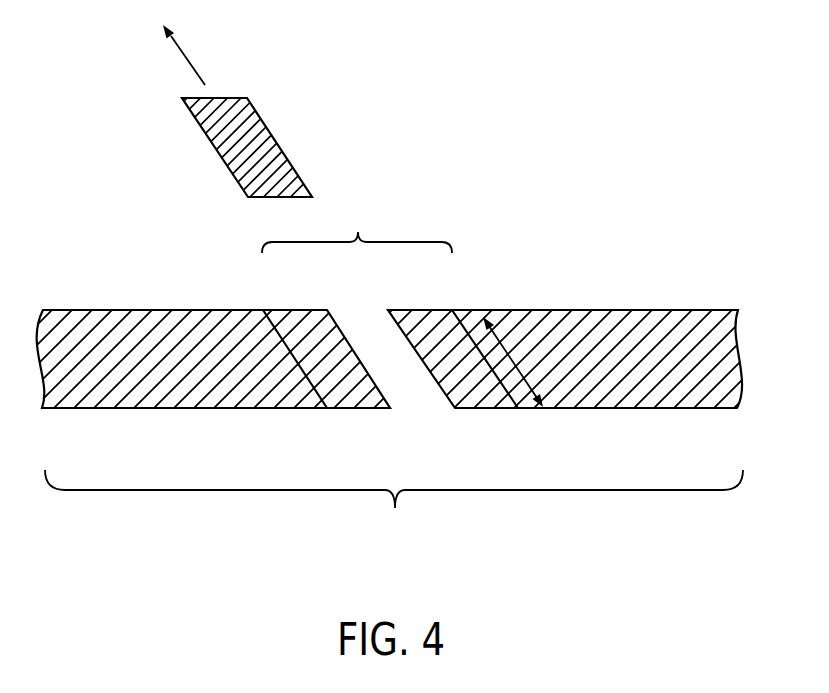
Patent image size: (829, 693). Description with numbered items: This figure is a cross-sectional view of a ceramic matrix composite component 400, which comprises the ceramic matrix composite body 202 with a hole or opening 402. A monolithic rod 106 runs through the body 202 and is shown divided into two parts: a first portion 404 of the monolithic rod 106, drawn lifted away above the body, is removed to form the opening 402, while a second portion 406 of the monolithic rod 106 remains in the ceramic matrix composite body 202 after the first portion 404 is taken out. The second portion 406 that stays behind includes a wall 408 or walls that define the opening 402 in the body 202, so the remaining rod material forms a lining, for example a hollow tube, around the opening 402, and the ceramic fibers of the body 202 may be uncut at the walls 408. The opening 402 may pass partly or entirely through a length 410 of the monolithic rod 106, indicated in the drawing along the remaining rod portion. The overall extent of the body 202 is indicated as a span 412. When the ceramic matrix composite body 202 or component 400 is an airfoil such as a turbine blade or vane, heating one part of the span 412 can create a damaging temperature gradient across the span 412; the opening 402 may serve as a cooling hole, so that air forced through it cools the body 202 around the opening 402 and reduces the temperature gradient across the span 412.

The ceramic matrix composite component 400 is at (574, 113).
The opening 402 is at (421, 406).
The first portion of the monolithic rod 404 is at (274, 136).
The second portion of the monolithic rod 406 is at (357, 227).
The wall 408 is at (405, 327).
The length of the monolithic rod 410 is at (495, 335).
The span of the ceramic matrix composite body 412 is at (394, 506).
The ceramic matrix composite body 202 is at (192, 400).
The monolithic rod 106 is at (350, 398).